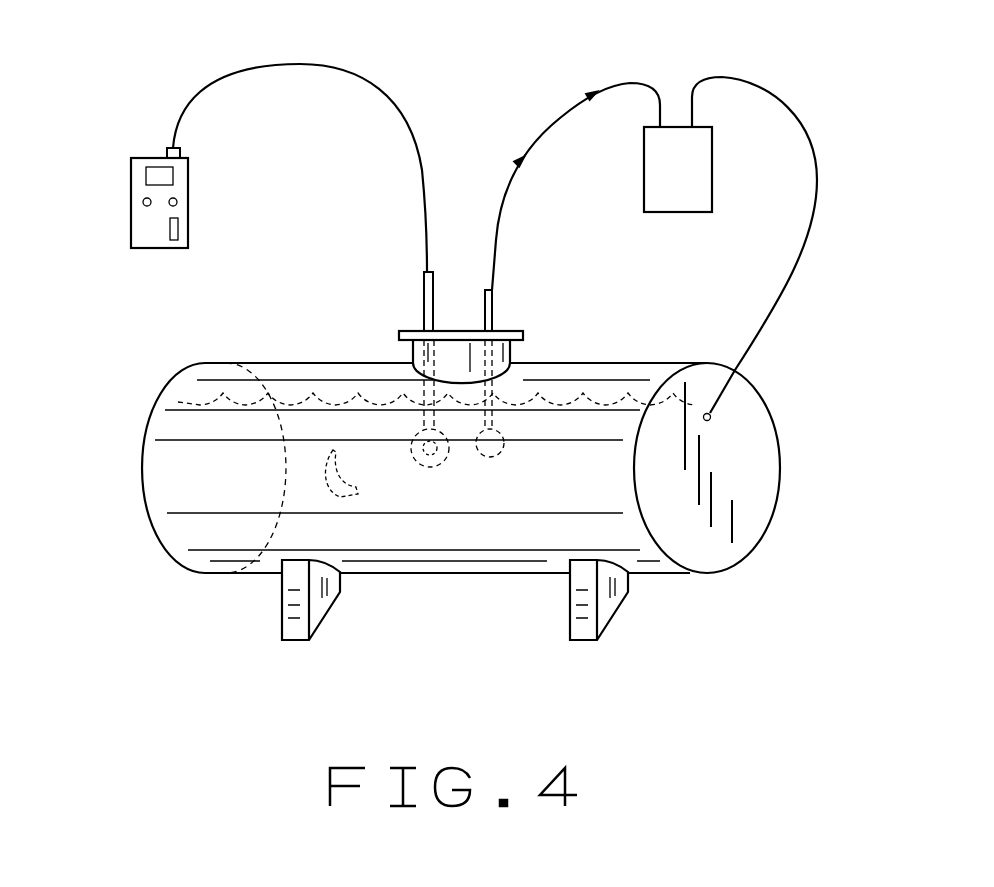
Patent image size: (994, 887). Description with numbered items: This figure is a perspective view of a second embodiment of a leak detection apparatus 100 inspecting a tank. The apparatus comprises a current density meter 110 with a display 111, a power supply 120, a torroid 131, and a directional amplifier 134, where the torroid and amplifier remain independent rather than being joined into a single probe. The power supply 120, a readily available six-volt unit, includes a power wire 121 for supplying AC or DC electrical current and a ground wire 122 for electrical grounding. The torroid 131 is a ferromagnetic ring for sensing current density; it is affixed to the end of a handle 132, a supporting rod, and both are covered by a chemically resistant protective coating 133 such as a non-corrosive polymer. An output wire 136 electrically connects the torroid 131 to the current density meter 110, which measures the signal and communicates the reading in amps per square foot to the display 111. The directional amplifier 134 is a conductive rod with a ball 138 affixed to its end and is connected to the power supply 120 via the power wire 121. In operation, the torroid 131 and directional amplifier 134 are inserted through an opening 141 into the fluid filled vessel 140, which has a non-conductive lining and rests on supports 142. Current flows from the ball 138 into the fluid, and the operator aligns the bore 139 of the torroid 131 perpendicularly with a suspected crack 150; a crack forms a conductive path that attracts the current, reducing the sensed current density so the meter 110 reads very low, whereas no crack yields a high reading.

The leak detection apparatus 100 is at (128, 93).
The current density meter 110 is at (195, 233).
The display 111 is at (175, 175).
The output wire 136 is at (337, 70).
The power supply 120 is at (695, 183).
The power wire 121 is at (627, 85).
The ground wire 122 is at (735, 75).
The fluid filled vessel 140 is at (130, 503).
The tank support legs 142 is at (330, 607).
The opening 141 is at (512, 325).
The handle 132 is at (422, 282).
The protective coating 133 is at (425, 387).
The torroid 131 is at (418, 433).
The bore 139 is at (433, 448).
The directional amplifier 134 is at (490, 290).
The ball 138 is at (500, 432).
The crack 150 is at (357, 493).